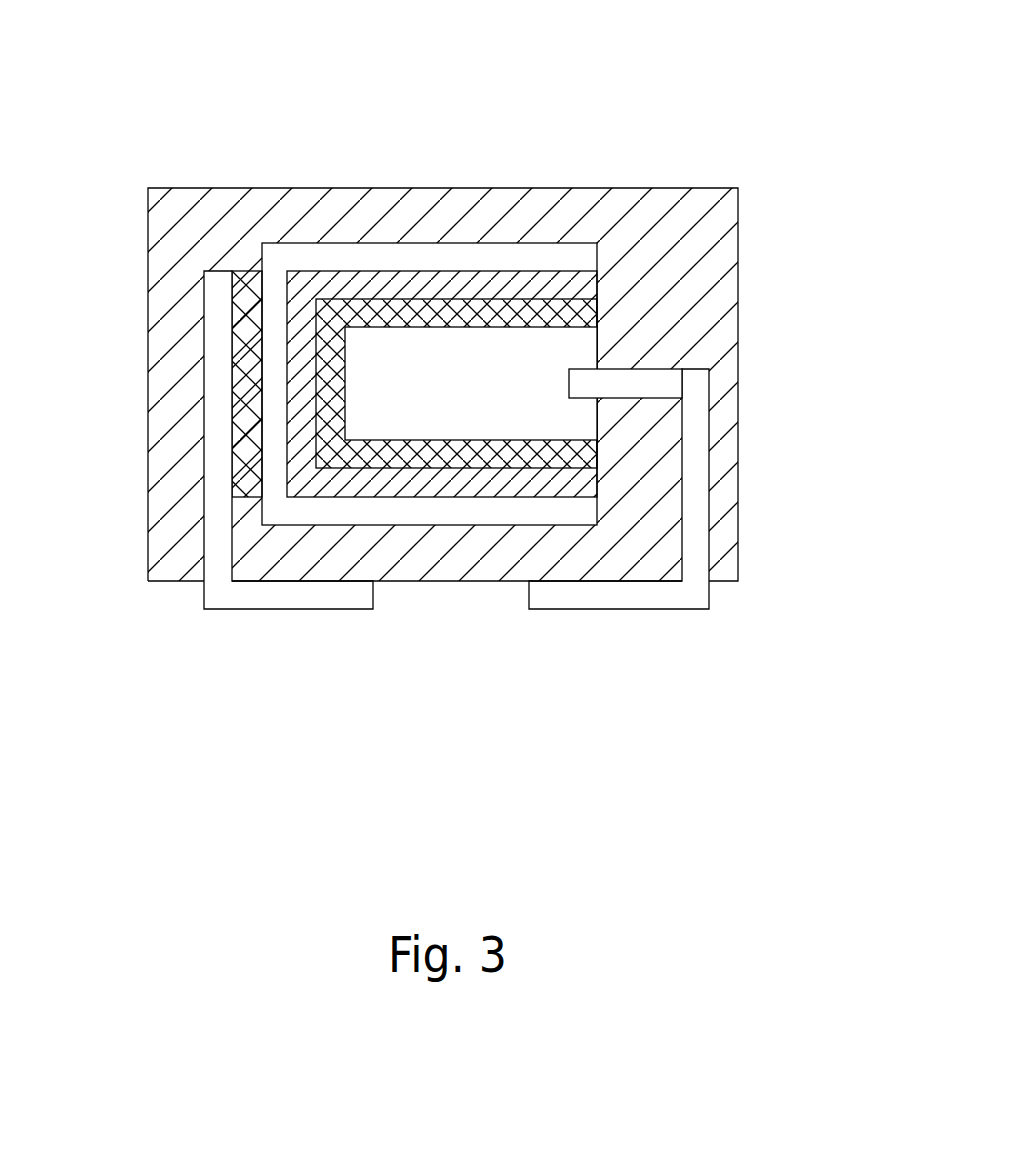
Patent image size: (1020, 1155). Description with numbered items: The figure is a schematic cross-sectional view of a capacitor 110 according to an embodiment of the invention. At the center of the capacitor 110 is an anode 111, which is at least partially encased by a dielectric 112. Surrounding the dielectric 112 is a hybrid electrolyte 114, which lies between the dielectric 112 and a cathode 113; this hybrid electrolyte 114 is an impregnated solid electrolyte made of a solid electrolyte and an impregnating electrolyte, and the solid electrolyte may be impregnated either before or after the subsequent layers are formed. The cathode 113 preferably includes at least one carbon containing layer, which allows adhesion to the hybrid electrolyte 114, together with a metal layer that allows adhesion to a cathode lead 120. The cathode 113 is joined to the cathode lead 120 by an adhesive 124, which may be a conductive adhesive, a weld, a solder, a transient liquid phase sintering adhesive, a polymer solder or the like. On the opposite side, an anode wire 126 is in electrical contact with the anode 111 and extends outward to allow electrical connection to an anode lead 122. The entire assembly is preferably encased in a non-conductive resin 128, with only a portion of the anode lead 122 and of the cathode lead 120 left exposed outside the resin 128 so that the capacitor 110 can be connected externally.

The capacitor 110 is at (757, 125).
The anode 111 is at (538, 363).
The dielectric 112 is at (467, 313).
The cathode 113 is at (308, 255).
The hybrid electrolyte 114 is at (369, 283).
The cathode lead 120 is at (275, 598).
The anode lead 122 is at (653, 597).
The adhesive 124 is at (242, 432).
The anode wire 126 is at (615, 384).
The non-conductive resin 128 is at (460, 559).